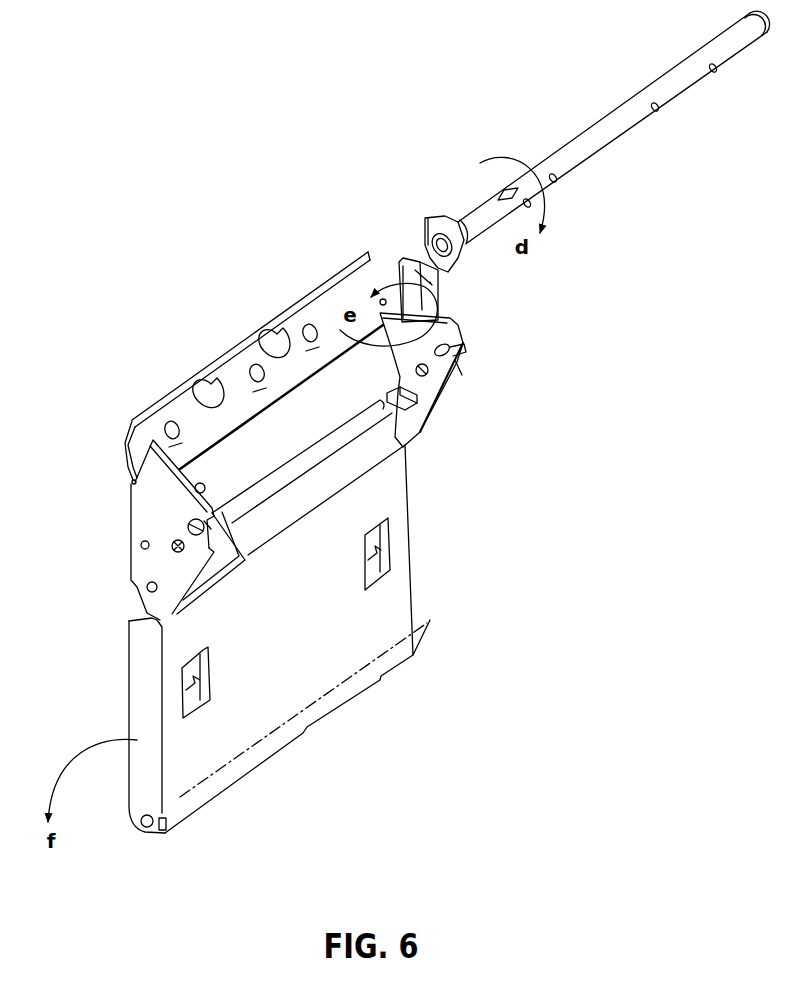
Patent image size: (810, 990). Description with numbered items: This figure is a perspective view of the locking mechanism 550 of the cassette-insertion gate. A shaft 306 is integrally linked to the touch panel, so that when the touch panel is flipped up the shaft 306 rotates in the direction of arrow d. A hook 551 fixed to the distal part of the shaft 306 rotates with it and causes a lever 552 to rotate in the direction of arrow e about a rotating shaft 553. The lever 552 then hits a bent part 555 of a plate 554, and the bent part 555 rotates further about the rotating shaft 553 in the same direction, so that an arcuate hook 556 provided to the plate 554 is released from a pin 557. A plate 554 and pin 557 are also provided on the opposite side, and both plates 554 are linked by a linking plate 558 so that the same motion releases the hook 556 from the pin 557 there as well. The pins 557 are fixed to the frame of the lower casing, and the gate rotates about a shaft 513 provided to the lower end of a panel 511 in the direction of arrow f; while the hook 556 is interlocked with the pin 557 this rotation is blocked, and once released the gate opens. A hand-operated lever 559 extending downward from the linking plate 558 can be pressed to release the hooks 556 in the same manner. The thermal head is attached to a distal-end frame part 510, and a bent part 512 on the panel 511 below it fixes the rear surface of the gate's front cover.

The locking mechanism 550 is at (217, 131).
The shaft 306 is at (583, 140).
The distal-end frame part 510 is at (233, 387).
The panel 511 is at (350, 650).
The bent part 512 is at (370, 543).
The shaft 513 is at (140, 827).
The hook 551 is at (452, 268).
The lever 552 is at (437, 305).
The rotating shaft 553 is at (178, 548).
The plate 554 is at (372, 340).
The bent part 555 is at (398, 314).
The arcuate hook 556 is at (467, 346).
The pin 557 is at (190, 528).
The linking plate 558 is at (253, 443).
The hand-operated lever 559 is at (210, 575).